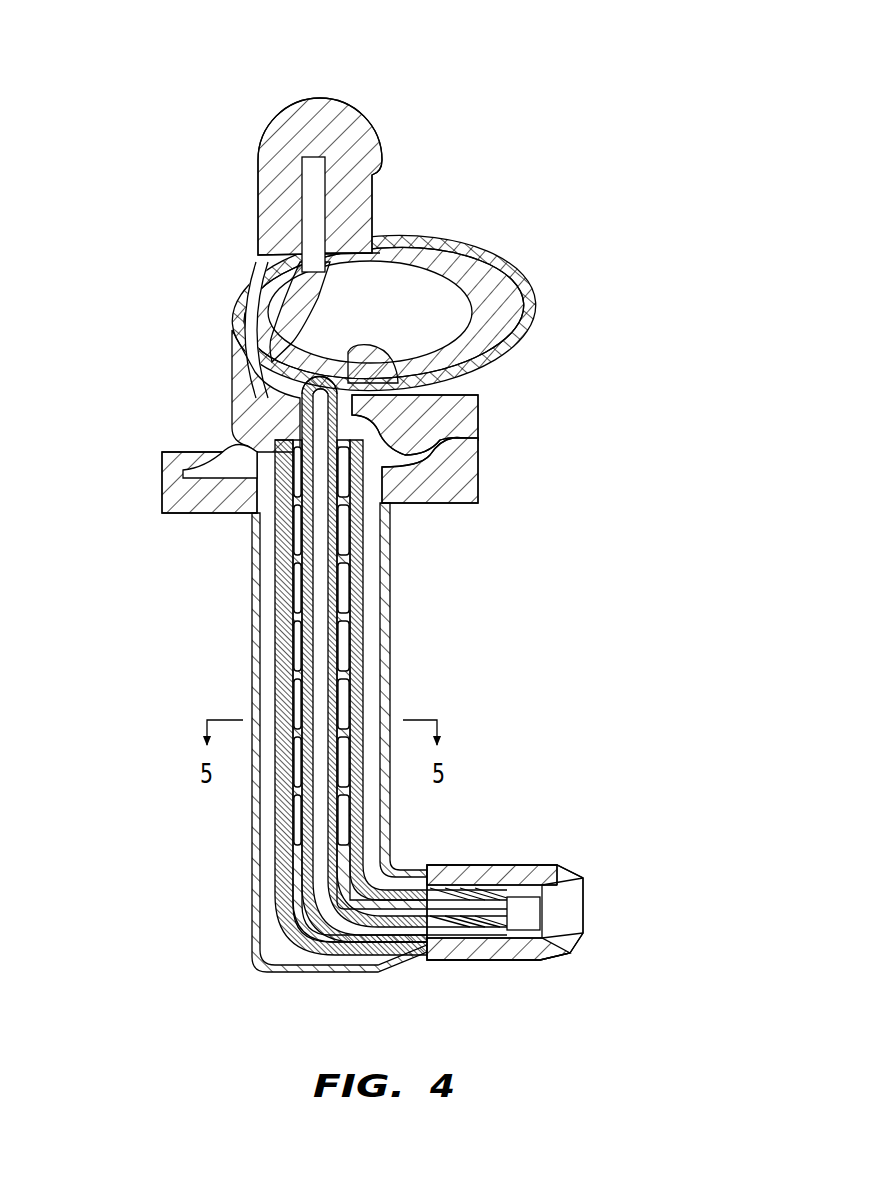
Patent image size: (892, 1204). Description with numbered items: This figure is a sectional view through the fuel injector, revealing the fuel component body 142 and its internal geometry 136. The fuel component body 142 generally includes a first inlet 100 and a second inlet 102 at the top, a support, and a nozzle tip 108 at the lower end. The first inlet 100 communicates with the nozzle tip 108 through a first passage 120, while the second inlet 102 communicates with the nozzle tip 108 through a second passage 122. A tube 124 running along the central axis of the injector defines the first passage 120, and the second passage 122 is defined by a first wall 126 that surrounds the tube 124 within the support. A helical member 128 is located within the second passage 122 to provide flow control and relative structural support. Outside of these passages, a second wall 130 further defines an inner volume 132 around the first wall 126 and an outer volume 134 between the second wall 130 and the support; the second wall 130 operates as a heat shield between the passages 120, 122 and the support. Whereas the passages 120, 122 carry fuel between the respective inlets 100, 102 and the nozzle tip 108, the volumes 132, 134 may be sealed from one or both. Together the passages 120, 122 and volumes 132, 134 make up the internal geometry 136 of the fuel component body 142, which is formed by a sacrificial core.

The first inlet 100 is at (430, 87).
The second inlet 102 is at (577, 189).
The nozzle tip 108 is at (546, 855).
The first passage 120 is at (297, 392).
The second passage 122 is at (297, 537).
The tube 124 is at (262, 403).
The first wall 126 is at (287, 567).
The helical member 128 is at (293, 610).
The second wall 130 is at (366, 578).
The inner volume 132 is at (282, 673).
The outer volume 134 is at (267, 692).
The internal geometry 136 is at (378, 667).
The fuel component body 142 is at (386, 675).